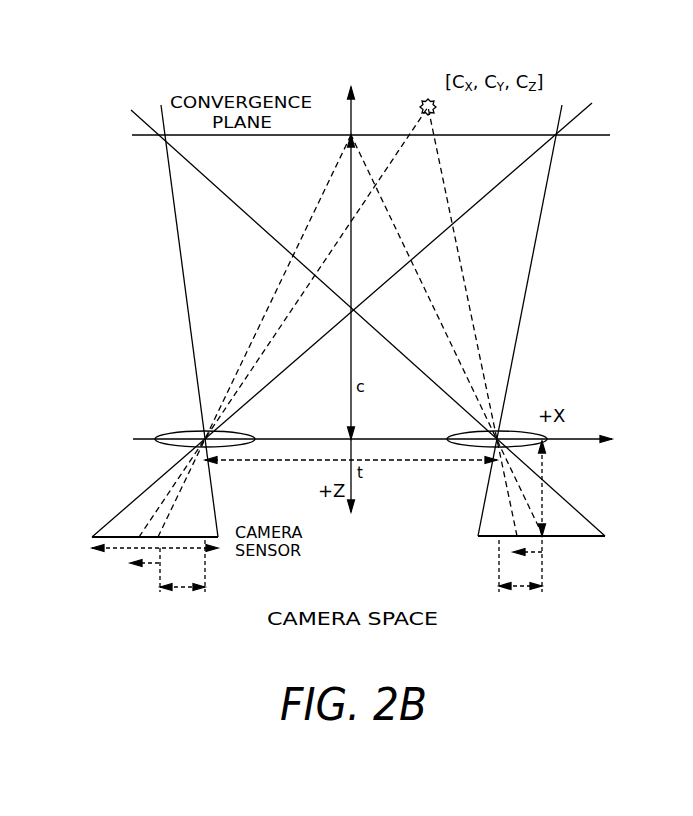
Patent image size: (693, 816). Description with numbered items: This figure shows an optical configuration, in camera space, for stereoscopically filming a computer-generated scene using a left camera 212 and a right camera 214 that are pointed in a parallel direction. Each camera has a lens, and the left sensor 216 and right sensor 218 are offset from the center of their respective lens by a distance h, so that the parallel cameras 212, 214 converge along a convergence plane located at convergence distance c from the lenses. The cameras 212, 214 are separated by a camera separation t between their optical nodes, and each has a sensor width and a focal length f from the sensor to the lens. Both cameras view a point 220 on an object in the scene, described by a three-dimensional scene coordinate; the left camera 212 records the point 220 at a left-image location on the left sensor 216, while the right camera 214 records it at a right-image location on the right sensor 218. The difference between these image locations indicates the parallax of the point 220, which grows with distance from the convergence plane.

The left camera 212 is at (143, 534).
The right camera 214 is at (560, 533).
The left sensor 216 is at (92, 537).
The right sensor 218 is at (605, 536).
The point 220 is at (421, 99).